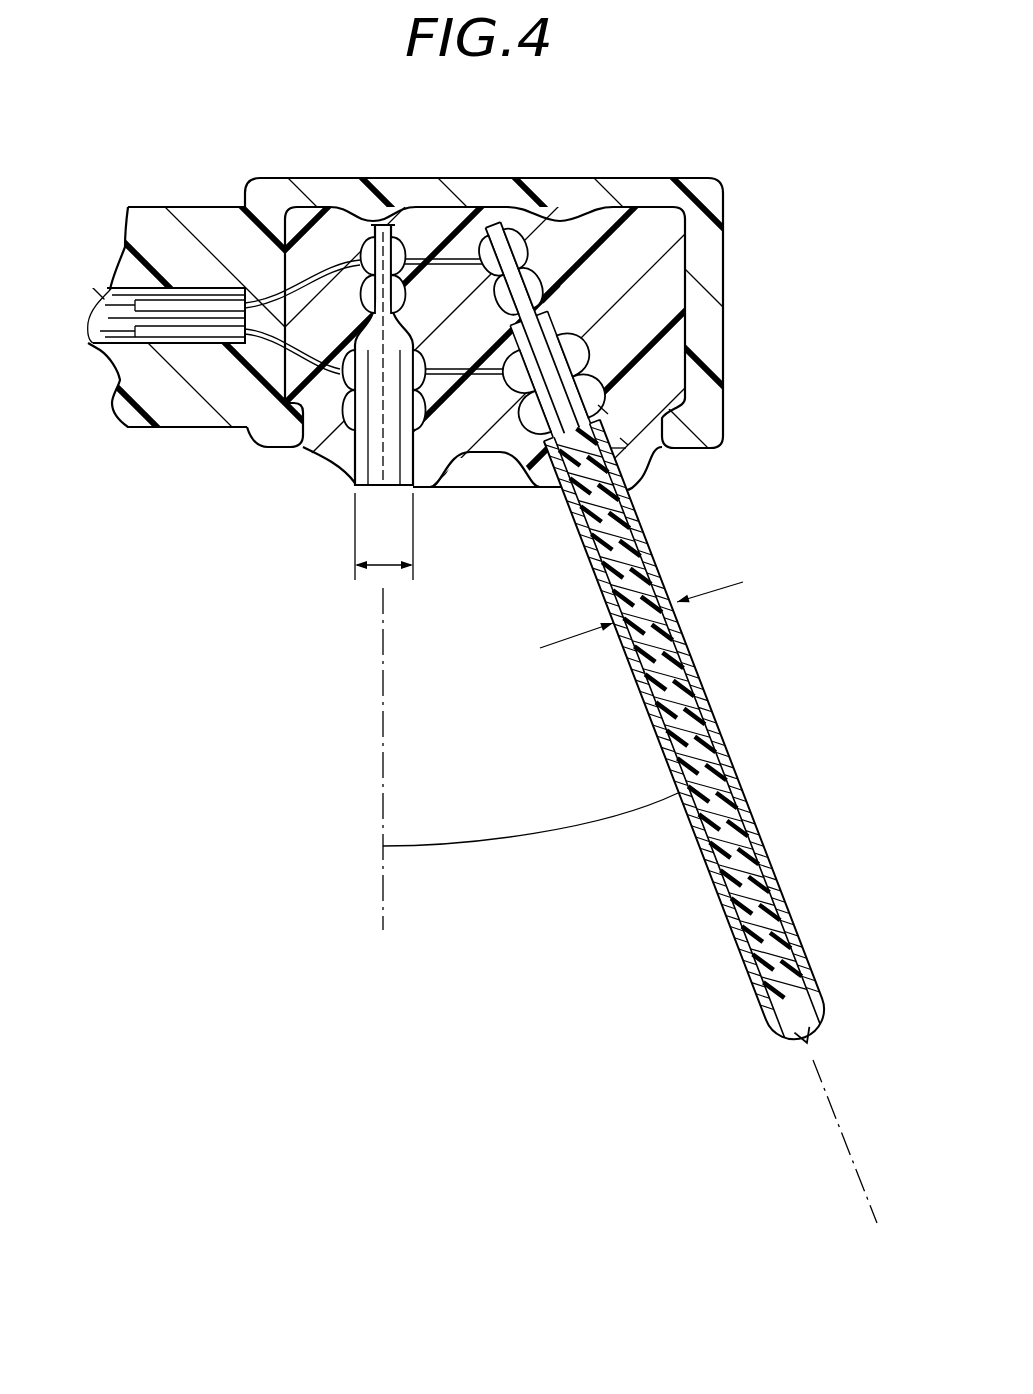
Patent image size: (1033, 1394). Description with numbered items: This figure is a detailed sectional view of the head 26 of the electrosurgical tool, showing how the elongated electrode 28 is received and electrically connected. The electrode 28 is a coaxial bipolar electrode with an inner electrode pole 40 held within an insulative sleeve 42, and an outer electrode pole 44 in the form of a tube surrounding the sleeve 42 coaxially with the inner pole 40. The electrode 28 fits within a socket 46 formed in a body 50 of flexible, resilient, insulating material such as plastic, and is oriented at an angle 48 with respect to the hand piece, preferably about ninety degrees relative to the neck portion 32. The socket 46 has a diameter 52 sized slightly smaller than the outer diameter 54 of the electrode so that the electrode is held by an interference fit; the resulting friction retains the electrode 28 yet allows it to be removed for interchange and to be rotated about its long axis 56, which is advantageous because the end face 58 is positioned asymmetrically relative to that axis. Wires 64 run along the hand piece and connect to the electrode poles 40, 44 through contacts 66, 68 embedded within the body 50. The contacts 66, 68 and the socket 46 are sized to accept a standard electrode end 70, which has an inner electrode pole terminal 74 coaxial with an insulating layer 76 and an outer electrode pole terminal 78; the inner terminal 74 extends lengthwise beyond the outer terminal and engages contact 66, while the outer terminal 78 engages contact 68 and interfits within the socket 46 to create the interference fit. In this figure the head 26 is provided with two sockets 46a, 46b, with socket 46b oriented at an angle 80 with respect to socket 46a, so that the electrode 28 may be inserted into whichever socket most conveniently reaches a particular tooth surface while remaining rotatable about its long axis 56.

The head 26 is at (345, 190).
The electrode 28 is at (688, 601).
The neck portion 32 is at (182, 413).
The inner electrode pole 40 is at (687, 727).
The insulative sleeve 42 is at (720, 767).
The outer electrode pole 44 is at (757, 843).
The socket 46 is at (506, 390).
The socket 46a is at (362, 479).
The socket 46b is at (622, 448).
The angle 48 is at (485, 491).
The body 50 is at (680, 268).
The diameter 52 is at (362, 573).
The outer diameter 54 is at (575, 640).
The long axis 56 is at (828, 1108).
The end face 58 is at (813, 1033).
The wires 64 is at (135, 318).
The contact 66 is at (520, 250).
The contact 68 is at (585, 350).
The standard electrode end 70 is at (552, 311).
The inner electrode pole terminal 74 is at (497, 226).
The insulating layer 76 is at (608, 414).
The outer electrode pole terminal 78 is at (628, 445).
The angle 80 is at (517, 837).